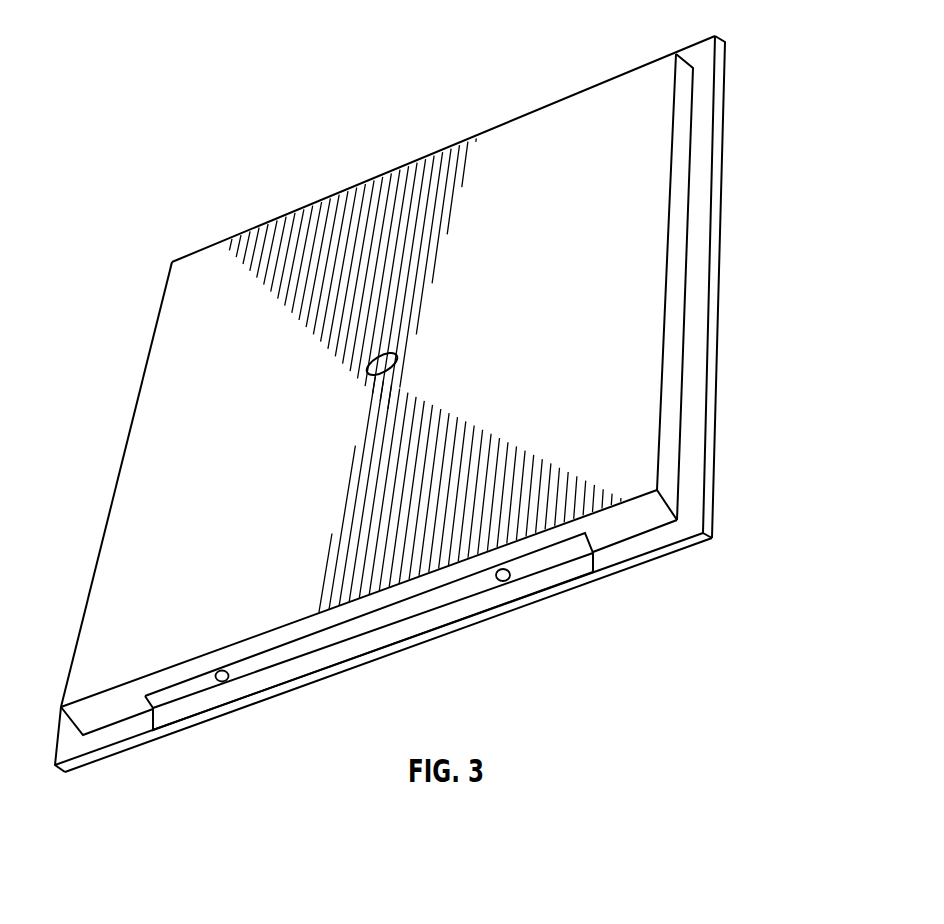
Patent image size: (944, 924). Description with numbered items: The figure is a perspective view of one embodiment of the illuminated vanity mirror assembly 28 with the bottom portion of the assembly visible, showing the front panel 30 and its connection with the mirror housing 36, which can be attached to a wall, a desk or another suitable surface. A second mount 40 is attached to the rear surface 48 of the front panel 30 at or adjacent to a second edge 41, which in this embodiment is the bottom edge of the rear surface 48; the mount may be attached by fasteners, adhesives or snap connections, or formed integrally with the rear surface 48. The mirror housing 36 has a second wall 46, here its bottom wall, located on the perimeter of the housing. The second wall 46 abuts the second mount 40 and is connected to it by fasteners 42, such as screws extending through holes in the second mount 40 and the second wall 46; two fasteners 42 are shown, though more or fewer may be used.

The illuminated vanity mirror assembly 28 is at (104, 286).
The front panel 30 is at (736, 89).
The mirror housing 36 is at (106, 490).
The second mount 40 is at (604, 562).
The second edge 41 is at (662, 556).
The fasteners 42 is at (503, 582).
The second wall 46 is at (118, 708).
The rear surface 48 is at (699, 375).